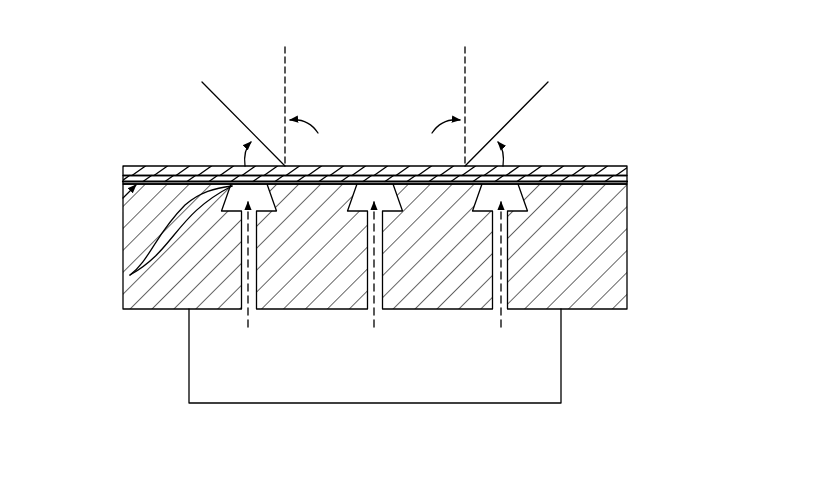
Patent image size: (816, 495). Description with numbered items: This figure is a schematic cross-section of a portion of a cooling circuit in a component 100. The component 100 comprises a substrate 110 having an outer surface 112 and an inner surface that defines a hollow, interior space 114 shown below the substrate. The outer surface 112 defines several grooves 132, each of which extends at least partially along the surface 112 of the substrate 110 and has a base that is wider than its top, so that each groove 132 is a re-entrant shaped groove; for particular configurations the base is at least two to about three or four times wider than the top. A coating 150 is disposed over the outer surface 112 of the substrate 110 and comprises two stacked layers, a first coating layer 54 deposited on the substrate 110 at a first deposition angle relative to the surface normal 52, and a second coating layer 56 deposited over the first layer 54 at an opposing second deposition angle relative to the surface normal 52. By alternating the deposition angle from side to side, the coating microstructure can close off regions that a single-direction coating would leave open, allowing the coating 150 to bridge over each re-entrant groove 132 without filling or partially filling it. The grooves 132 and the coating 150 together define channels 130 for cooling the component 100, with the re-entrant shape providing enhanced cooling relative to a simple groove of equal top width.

The component 100 is at (68, 60).
The surface normal 52 is at (281, 52).
The first coating layer 54 is at (628, 179).
The second coating layer 56 is at (628, 166).
The substrate 110 is at (612, 262).
The outer surface 112 is at (123, 198).
The hollow interior space 114 is at (538, 353).
The channel 130 is at (128, 277).
The groove 132 is at (128, 277).
The coating 150 is at (375, 154).